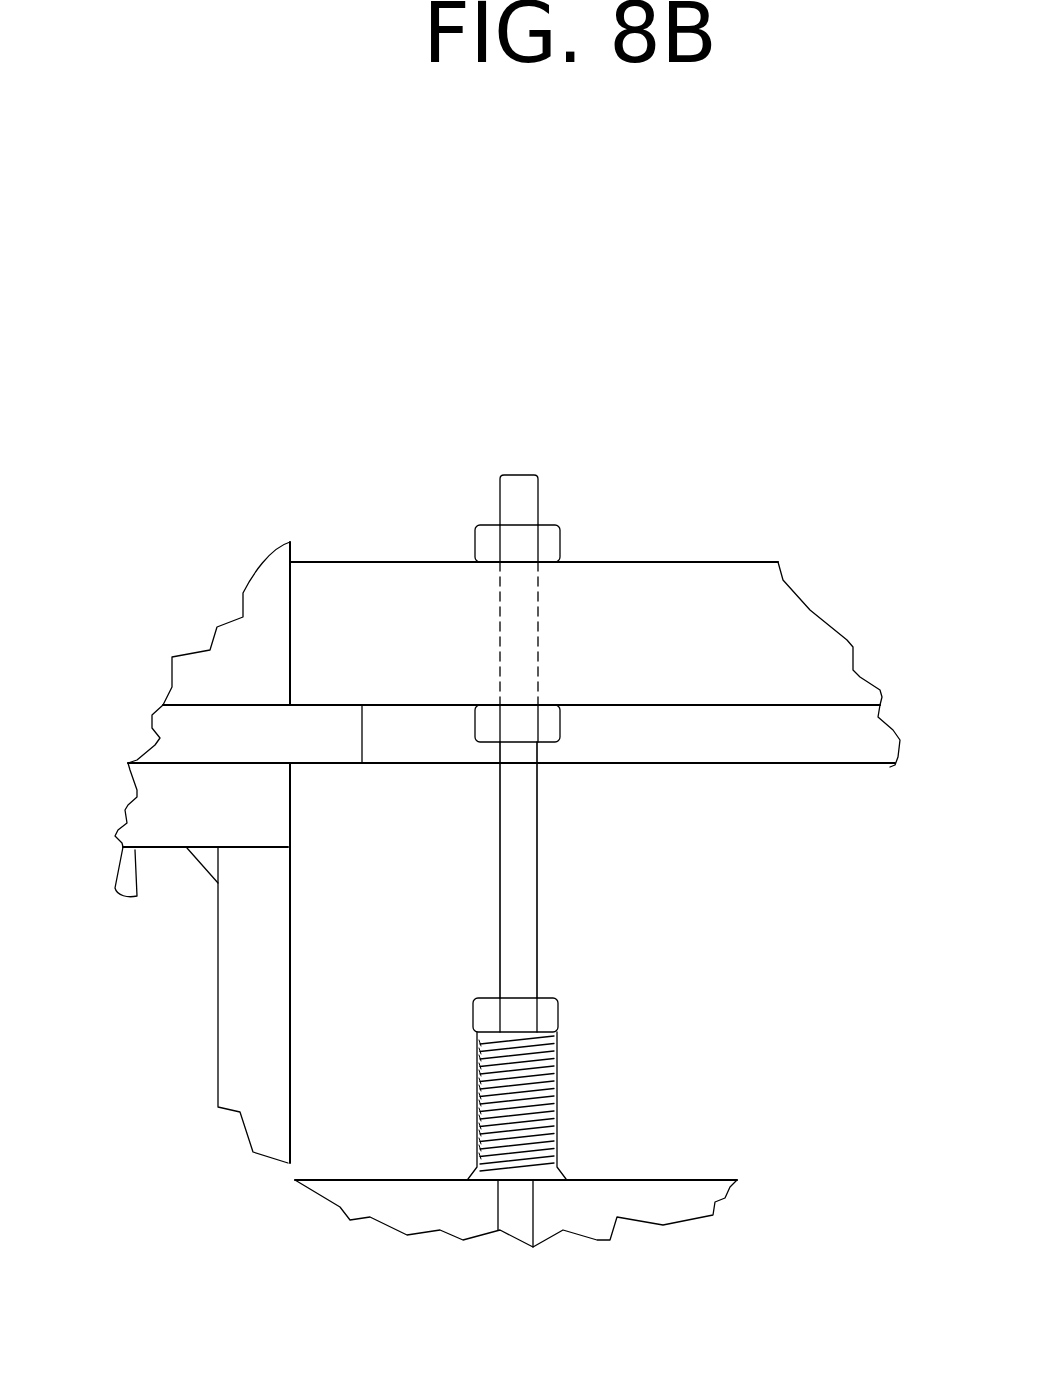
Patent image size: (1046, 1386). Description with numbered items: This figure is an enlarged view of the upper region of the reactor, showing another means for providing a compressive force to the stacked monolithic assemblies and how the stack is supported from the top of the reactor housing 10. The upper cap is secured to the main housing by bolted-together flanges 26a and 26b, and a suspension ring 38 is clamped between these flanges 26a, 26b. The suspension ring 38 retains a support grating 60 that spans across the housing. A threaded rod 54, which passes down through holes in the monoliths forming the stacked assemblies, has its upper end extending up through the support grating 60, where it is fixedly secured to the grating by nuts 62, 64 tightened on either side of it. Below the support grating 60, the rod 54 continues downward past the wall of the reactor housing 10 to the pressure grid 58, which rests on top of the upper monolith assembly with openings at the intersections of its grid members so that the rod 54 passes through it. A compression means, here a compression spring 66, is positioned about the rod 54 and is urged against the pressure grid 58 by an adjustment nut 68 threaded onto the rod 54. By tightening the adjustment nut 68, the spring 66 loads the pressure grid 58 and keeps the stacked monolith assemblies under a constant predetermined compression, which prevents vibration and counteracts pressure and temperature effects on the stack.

The reactor housing 10 is at (245, 993).
The flange 26a is at (160, 805).
The flange 26b is at (208, 650).
The suspension ring 38 is at (192, 740).
The rod 54 is at (525, 877).
The pressure grid 58 is at (598, 1207).
The support grating 60 is at (780, 630).
The nut 62 is at (550, 542).
The nut 64 is at (550, 725).
The compression spring 66 is at (552, 1100).
The adjustment nut 68 is at (558, 1002).